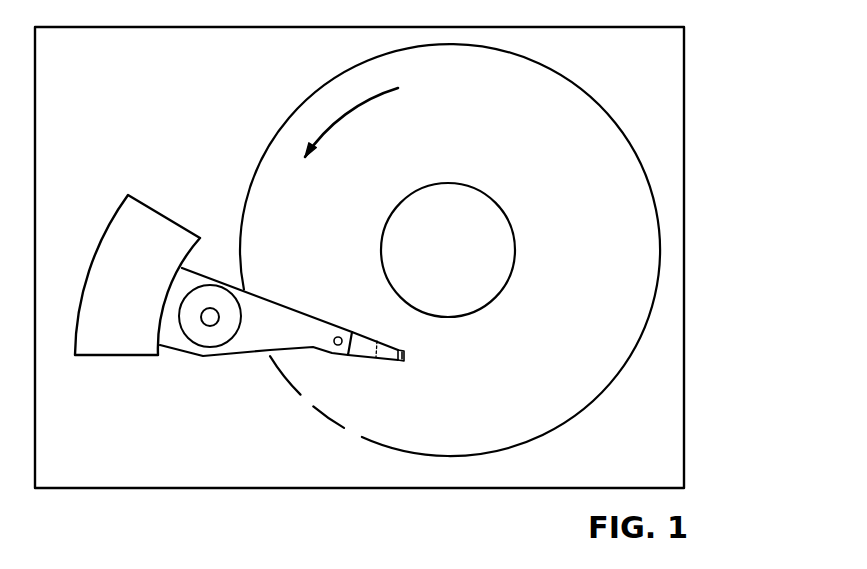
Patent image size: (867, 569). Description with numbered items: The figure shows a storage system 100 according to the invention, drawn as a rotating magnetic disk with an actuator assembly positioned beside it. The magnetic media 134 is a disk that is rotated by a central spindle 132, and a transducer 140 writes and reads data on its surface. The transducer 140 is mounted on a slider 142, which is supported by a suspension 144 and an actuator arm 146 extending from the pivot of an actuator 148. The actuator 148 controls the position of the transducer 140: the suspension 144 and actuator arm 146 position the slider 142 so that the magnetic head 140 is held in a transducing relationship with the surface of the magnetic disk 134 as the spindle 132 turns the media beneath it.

The storage system 100 is at (702, 68).
The spindle 132 is at (487, 195).
The magnetic media 134 is at (602, 272).
The transducer 140 is at (404, 355).
The slider 142 is at (403, 346).
The suspension 144 is at (360, 357).
The actuator arm 146 is at (268, 297).
The actuator 148 is at (210, 317).